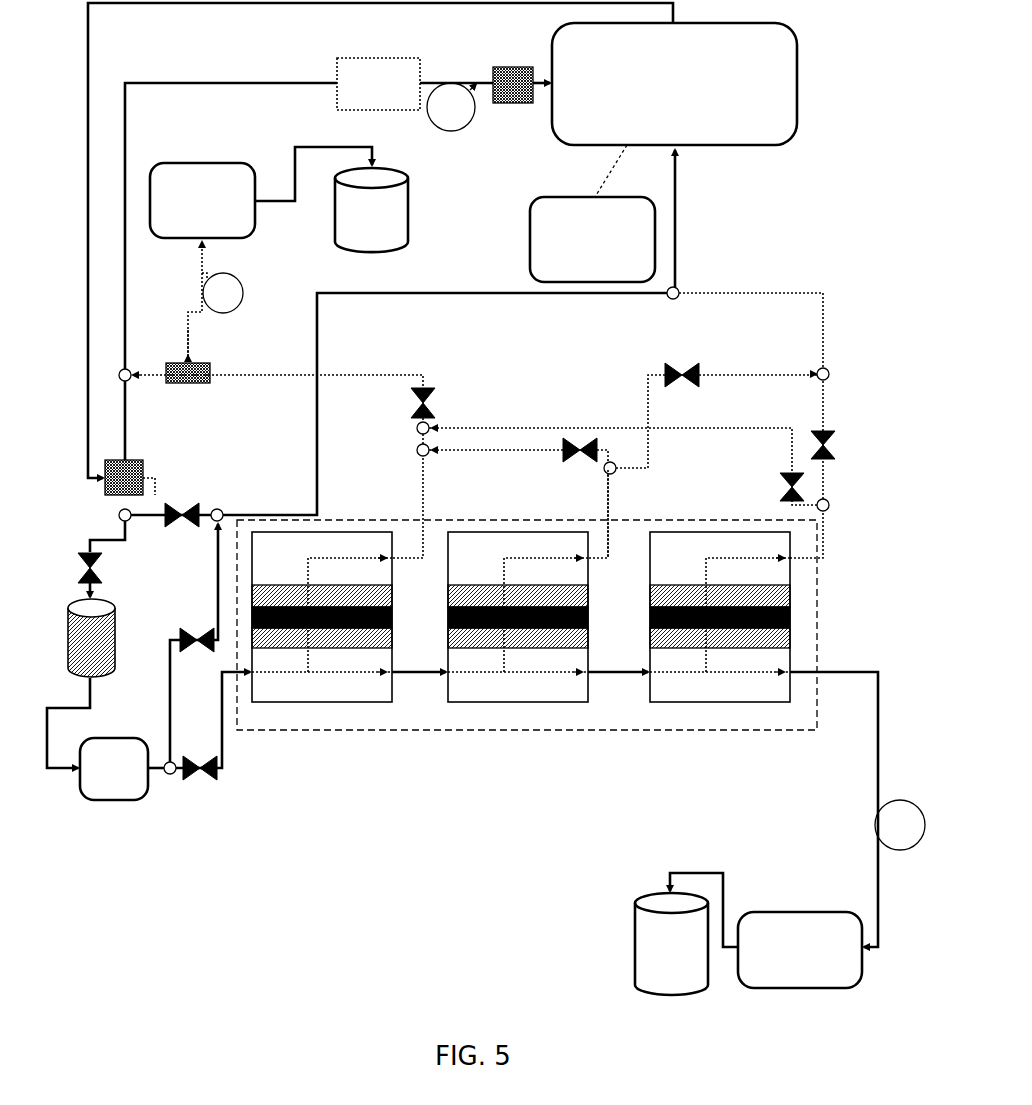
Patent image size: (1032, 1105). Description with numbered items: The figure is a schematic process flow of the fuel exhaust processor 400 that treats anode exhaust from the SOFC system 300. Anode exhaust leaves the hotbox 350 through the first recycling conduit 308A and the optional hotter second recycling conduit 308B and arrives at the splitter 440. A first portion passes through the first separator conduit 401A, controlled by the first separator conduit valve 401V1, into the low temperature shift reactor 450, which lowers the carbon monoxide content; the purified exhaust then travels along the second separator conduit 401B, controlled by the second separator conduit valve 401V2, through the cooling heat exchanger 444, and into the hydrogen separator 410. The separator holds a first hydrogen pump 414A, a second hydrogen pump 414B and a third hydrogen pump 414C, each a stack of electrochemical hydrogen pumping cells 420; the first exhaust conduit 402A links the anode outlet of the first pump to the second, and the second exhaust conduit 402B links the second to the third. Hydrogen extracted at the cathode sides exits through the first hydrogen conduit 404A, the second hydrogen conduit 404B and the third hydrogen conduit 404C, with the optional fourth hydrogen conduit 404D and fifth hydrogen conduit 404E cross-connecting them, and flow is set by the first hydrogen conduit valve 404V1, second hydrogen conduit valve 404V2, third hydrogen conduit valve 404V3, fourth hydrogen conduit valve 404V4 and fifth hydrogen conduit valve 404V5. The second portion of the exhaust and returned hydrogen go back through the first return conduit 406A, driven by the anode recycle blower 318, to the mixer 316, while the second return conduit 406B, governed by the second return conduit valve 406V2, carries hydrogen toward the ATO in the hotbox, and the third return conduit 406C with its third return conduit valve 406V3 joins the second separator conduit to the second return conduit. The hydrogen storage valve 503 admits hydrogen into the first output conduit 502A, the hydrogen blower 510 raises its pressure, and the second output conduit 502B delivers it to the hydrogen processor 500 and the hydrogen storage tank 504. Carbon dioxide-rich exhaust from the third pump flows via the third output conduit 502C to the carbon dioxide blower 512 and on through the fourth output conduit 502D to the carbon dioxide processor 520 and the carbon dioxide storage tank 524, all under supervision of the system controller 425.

The SOFC system 300 is at (492, 939).
The first recycling conduit 308A is at (380, 240).
The second recycling conduit 308B is at (152, 82).
The mixer 316 is at (514, 65).
The anode recycle blower 318 is at (451, 107).
The hotbox 350 is at (674, 84).
The fuel exhaust processor 400 is at (813, 183).
The first separator conduit 401A is at (130, 540).
The second separator conduit 401B is at (60, 707).
The first separator conduit valve 401V1 is at (83, 555).
The second separator conduit valve 401V2 is at (200, 773).
The first exhaust conduit 402A is at (415, 680).
The second exhaust conduit 402B is at (618, 677).
The first hydrogen conduit 404A is at (417, 562).
The second hydrogen conduit 404B is at (608, 562).
The third hydrogen conduit 404C is at (825, 317).
The fourth hydrogen conduit 404D is at (727, 430).
The fifth hydrogen conduit 404E is at (642, 468).
The first hydrogen conduit valve 404V1 is at (430, 403).
The second hydrogen conduit valve 404V2 is at (567, 455).
The third hydrogen conduit valve 404V3 is at (837, 438).
The fourth hydrogen conduit valve 404V4 is at (800, 480).
The fifth hydrogen conduit valve 404V5 is at (680, 367).
The first return conduit 406A is at (128, 237).
The second return conduit 406B is at (487, 293).
The third return conduit 406C is at (167, 685).
The second return conduit valve 406V2 is at (195, 507).
The third return conduit valve 406V3 is at (197, 638).
The hydrogen separator 410 is at (527, 733).
The first hydrogen pump 414A is at (322, 703).
The second hydrogen pump 414B is at (520, 703).
The third hydrogen pump 414C is at (720, 703).
The hydrogen pumping cells 420 is at (795, 611).
The system controller 425 is at (592, 213).
The splitter 440 is at (145, 470).
The heat exchanger 444 is at (114, 769).
The low temperature shift reactor 450 is at (91, 638).
The hydrogen processor 500 is at (261, 182).
The first output conduit 502A is at (192, 335).
The second output conduit 502B is at (207, 252).
The third output conduit 502C is at (877, 787).
The fourth output conduit 502D is at (877, 890).
The hydrogen storage valve 503 is at (188, 382).
The hydrogen storage tank 504 is at (371, 210).
The hydrogen blower 510 is at (222, 293).
The carbon dioxide blower 512 is at (900, 825).
The carbon dioxide processor 520 is at (766, 930).
The carbon dioxide storage tank 524 is at (671, 944).